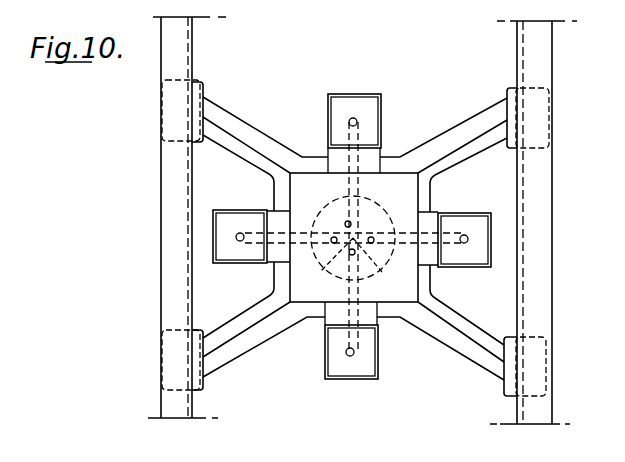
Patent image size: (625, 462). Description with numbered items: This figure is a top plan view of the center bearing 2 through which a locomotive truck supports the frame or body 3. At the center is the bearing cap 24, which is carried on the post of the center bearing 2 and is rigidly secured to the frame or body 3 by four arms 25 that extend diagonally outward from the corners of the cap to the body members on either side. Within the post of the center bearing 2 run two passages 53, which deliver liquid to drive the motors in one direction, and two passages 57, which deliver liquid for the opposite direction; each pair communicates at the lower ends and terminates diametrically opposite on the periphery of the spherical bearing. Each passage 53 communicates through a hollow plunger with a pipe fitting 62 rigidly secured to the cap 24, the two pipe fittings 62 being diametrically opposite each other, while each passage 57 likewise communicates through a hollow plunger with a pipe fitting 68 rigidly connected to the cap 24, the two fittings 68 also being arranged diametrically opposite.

The center bearing 2 is at (447, 62).
The frame or body 3 is at (540, 48).
The bearing cap 24 is at (430, 293).
The arms 25 is at (224, 114).
The passages 53 is at (351, 258).
The passages 57 is at (353, 238).
The pipe fitting 62 is at (240, 210).
The pipe fitting 68 is at (353, 94).